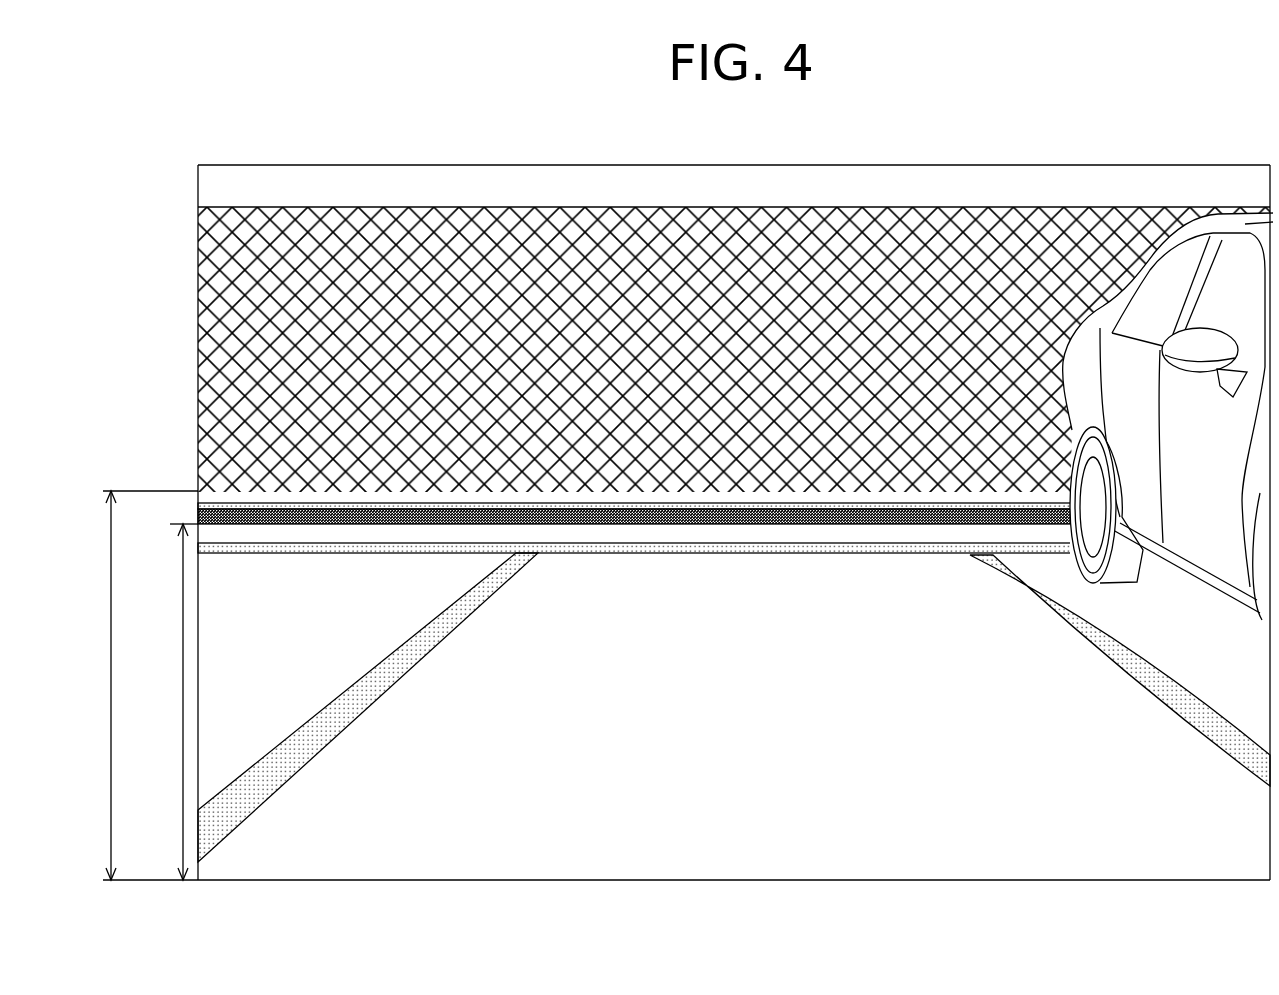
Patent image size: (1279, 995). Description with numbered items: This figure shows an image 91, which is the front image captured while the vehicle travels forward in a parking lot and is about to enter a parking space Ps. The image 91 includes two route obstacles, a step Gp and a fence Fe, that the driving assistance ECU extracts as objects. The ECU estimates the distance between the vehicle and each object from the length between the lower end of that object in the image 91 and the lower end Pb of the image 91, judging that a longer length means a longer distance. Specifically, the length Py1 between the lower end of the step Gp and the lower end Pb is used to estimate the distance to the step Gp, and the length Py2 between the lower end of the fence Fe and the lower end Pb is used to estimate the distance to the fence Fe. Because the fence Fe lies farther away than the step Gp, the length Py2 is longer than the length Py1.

The image 91 is at (458, 165).
The fence Fe is at (190, 272).
The step Gp is at (688, 527).
The length Py1 is at (165, 702).
The length Py2 is at (130, 685).
The lower end of the image Pb is at (413, 880).
The parking space Ps is at (573, 898).